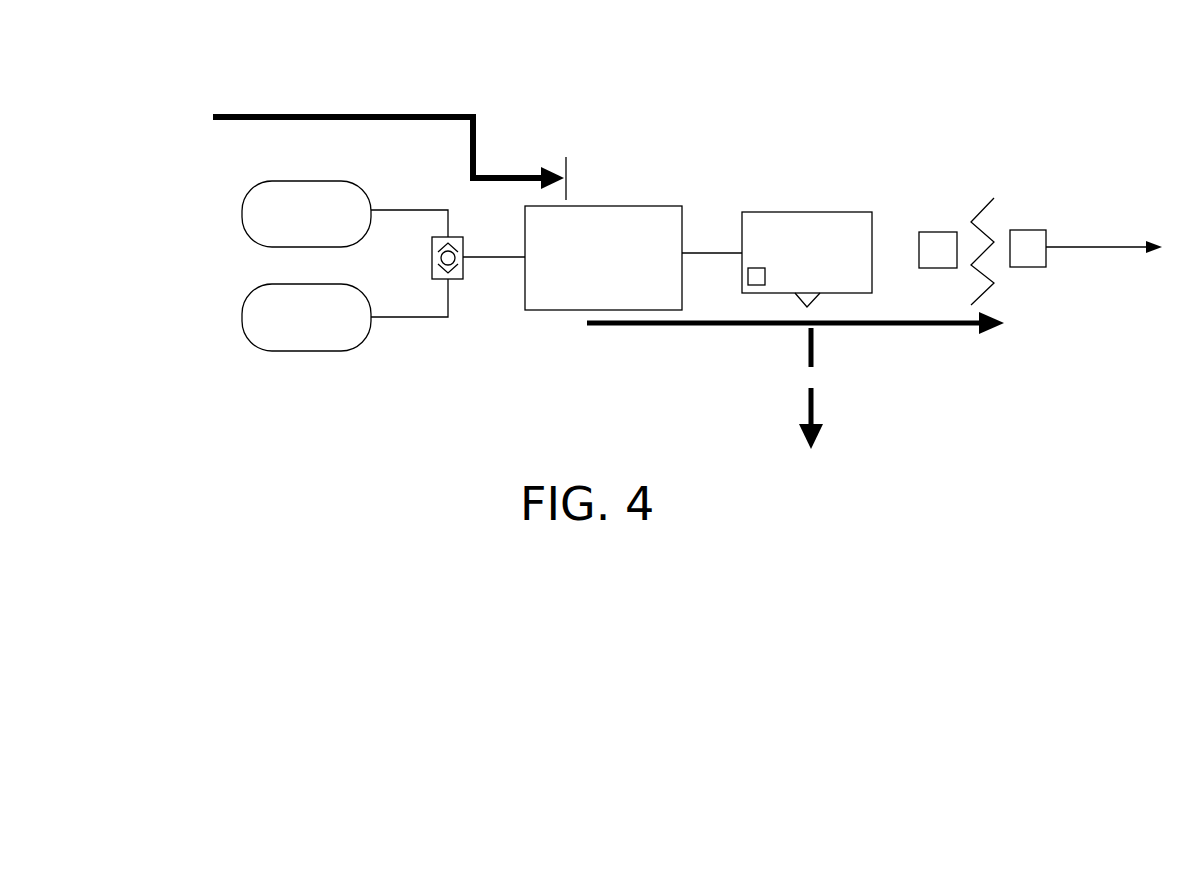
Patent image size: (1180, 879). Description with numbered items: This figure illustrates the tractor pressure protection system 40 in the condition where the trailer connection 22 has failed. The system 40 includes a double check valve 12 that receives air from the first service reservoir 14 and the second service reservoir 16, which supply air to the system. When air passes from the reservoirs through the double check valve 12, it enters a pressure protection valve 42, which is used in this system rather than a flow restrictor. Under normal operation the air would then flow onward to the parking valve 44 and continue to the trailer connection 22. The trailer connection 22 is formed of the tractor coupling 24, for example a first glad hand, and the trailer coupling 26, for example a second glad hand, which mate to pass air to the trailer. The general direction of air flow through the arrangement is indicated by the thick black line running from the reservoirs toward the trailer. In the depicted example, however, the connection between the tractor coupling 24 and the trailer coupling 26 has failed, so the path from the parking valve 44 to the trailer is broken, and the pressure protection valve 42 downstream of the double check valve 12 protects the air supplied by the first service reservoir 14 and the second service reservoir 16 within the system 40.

The tractor pressure protection system 40 is at (628, 38).
The first service reservoir 14 is at (243, 211).
The second service reservoir 16 is at (243, 307).
The double check valve 12 is at (455, 237).
The parking valve 44 is at (812, 212).
The pressure protection valve 42 is at (748, 280).
The tractor coupling 24 is at (944, 268).
The trailer connection 22 is at (976, 176).
The trailer coupling 26 is at (1030, 267).